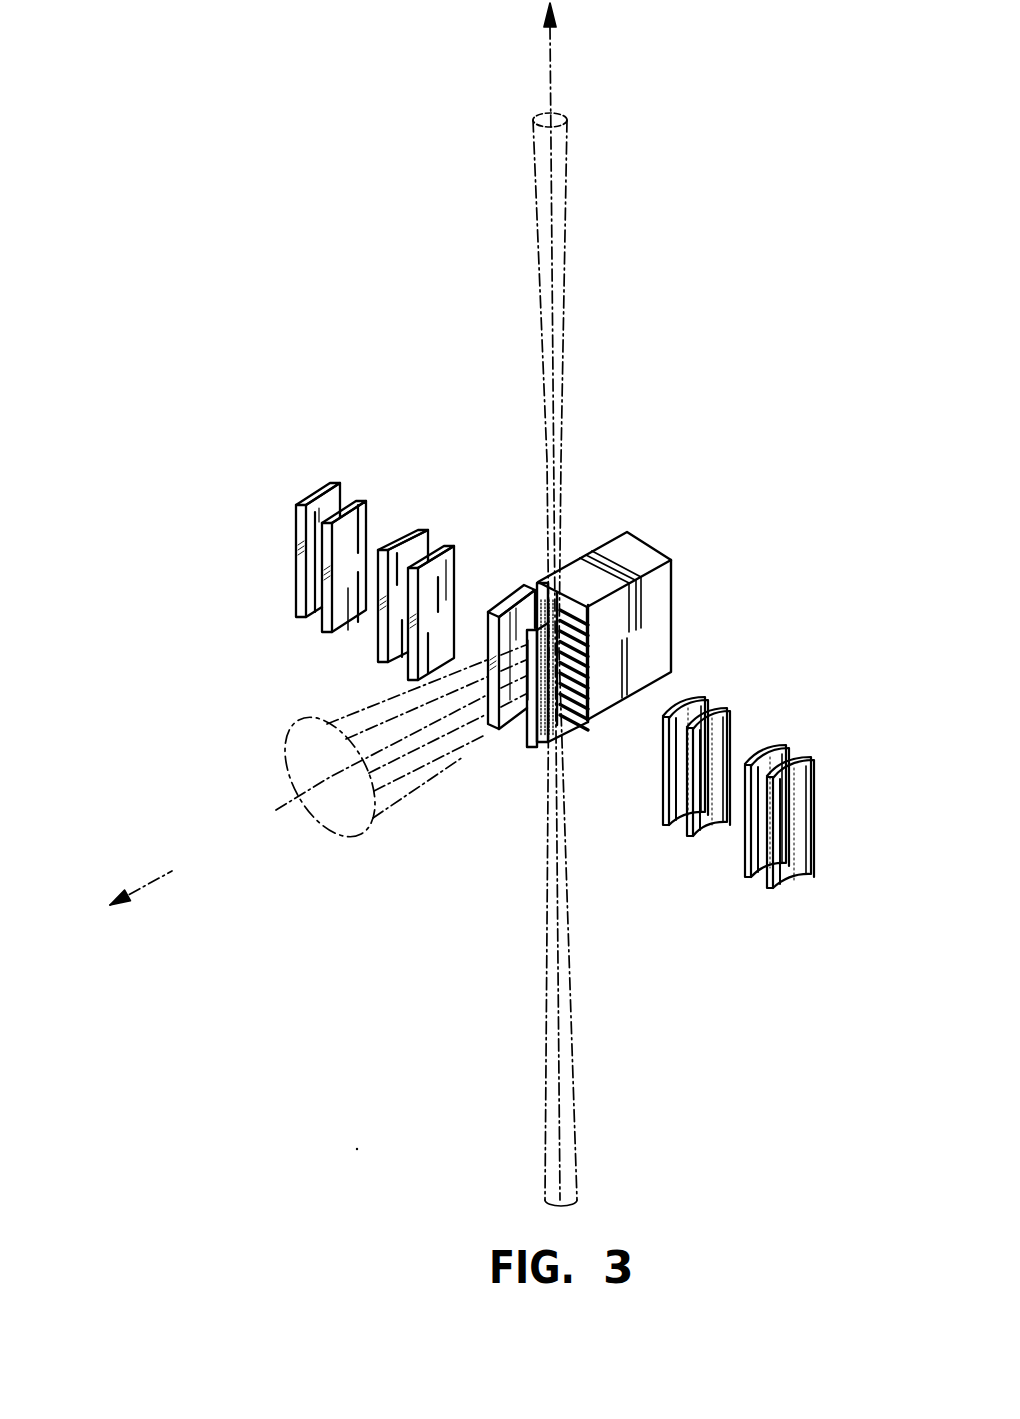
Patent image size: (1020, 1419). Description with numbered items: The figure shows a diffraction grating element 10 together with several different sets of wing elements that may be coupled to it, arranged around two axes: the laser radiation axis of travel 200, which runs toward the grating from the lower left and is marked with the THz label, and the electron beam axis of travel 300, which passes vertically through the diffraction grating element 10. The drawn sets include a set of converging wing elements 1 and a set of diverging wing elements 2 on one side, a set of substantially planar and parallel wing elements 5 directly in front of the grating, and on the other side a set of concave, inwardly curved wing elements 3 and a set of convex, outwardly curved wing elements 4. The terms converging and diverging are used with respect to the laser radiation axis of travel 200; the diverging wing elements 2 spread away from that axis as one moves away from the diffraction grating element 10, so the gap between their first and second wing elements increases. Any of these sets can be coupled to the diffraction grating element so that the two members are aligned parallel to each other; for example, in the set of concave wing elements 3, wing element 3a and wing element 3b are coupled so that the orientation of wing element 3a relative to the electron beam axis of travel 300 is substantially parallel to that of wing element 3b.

The set of converging wing elements 1 is at (340, 469).
The set of diverging wing elements 2 is at (423, 521).
The set of concave wing elements 3 is at (705, 678).
The wing element 3a is at (663, 745).
The wing element 3b is at (713, 831).
The set of convex wing elements 4 is at (783, 730).
The set of substantially planar and parallel wing elements 5 is at (504, 604).
The diffraction grating element 10 is at (609, 532).
The laser radiation axis of travel 200 is at (166, 871).
The electron beam axis of travel 300 is at (550, 66).